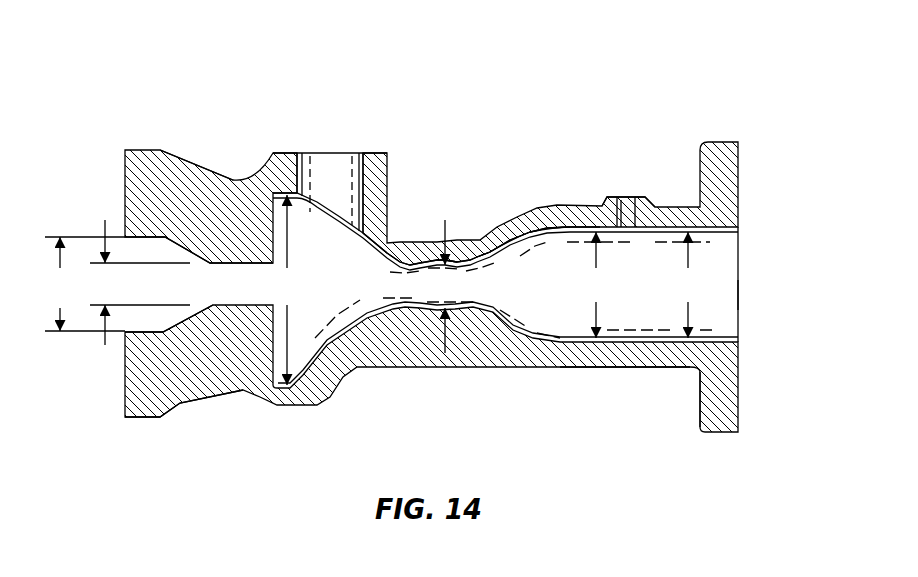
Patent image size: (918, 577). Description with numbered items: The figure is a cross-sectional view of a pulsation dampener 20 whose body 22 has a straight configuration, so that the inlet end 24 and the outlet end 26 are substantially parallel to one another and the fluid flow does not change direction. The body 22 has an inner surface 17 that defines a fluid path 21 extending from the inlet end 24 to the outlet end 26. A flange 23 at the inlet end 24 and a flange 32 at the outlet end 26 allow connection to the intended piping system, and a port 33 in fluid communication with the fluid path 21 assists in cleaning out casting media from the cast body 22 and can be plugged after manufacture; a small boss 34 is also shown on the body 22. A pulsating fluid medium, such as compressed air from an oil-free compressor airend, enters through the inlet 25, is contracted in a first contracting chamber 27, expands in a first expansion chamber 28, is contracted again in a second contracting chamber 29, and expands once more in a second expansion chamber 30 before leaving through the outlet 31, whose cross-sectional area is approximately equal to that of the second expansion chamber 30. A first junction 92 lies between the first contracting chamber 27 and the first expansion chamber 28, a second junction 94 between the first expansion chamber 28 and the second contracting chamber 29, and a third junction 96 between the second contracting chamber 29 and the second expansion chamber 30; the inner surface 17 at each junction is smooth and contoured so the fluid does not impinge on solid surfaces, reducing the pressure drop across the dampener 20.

The pulsation dampener 20 is at (219, 53).
The fluid path 21 is at (741, 296).
The body 22 is at (467, 343).
The flange 23 is at (135, 166).
The inlet end 24 is at (140, 393).
The inlet 25 is at (145, 247).
The outlet end 26 is at (728, 364).
The first contracting chamber 27 is at (242, 306).
The first expansion chamber 28 is at (346, 248).
The second contracting chamber 29 is at (460, 256).
The second expansion chamber 30 is at (558, 253).
The outlet 31 is at (728, 250).
The flange 32 is at (727, 170).
The port 33 is at (375, 152).
The boss 34 is at (642, 195).
The first junction 92 is at (252, 245).
The second junction 94 is at (380, 246).
The third junction 96 is at (500, 257).
The inner surface 17 is at (528, 232).